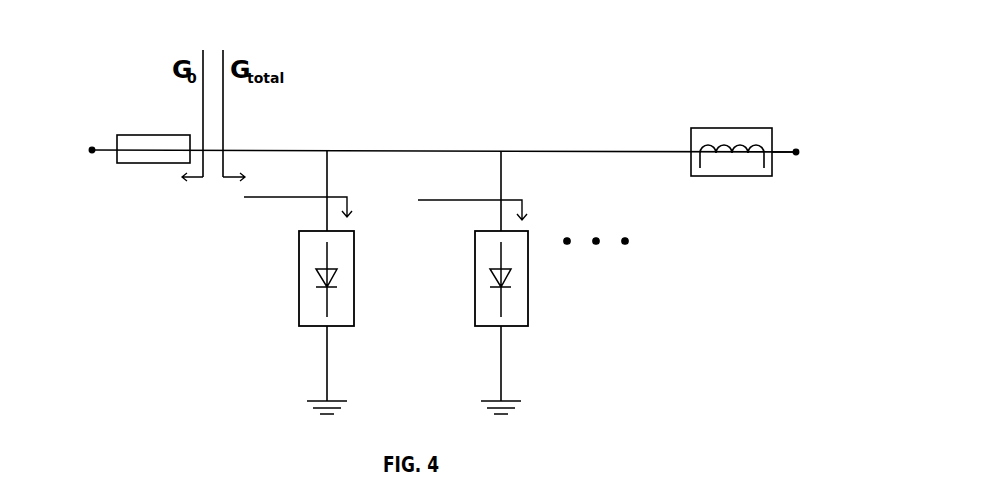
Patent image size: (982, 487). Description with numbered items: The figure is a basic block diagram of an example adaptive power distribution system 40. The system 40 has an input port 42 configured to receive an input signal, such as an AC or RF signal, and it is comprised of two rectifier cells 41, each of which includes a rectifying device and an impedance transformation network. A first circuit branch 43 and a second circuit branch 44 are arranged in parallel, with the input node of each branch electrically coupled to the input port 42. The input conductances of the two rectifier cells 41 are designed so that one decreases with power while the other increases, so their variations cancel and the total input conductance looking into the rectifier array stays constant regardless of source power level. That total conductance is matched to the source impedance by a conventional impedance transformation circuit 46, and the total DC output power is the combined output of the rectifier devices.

The adaptive power distribution system 40 is at (767, 315).
The rectifier cell 41 is at (354, 313).
The input port 42 is at (93, 162).
The first circuit branch 43 is at (251, 350).
The second circuit branch 44 is at (590, 202).
The impedance transformation circuit 46 is at (160, 165).